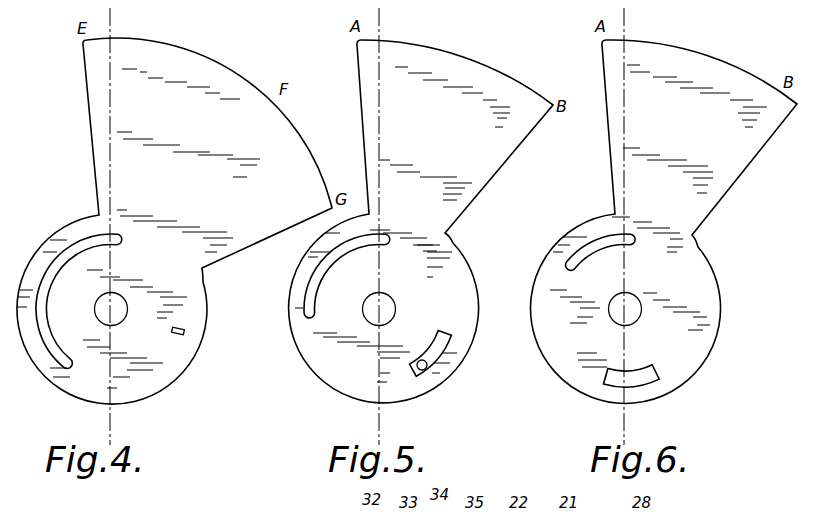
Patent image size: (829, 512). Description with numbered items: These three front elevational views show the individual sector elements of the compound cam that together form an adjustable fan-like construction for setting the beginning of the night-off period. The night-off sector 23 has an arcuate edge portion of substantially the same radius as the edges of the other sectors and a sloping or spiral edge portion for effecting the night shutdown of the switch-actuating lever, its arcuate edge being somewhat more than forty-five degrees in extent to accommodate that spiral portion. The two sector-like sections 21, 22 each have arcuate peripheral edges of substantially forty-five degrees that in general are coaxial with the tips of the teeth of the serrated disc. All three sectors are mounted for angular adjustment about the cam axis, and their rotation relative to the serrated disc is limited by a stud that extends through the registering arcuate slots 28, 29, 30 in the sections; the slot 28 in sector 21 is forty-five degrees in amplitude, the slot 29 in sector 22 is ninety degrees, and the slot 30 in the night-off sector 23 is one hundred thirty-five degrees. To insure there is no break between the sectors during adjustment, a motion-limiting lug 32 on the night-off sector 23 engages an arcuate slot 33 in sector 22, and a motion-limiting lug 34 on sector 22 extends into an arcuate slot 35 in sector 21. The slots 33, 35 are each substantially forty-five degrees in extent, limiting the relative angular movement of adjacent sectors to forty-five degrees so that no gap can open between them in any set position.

In FIG. 6, the sector-like section 21 is at (702, 68).
In FIG. 5, the sector-like section 22 is at (487, 75).
In FIG. 4, the arcuate night-off section 23 is at (247, 92).
In FIG. 6, the arcuate slot 28 is at (583, 245).
In FIG. 5, the arcuate slot 29 is at (310, 279).
In FIG. 4, the arcuate slot 30 is at (88, 240).
In FIG. 4, the motion-limiting lug 32 is at (178, 336).
In FIG. 5, the arcuate slot 33 is at (420, 374).
In FIG. 5, the motion-limiting lug 34 is at (410, 372).
In FIG. 6, the arcuate slot 35 is at (648, 380).